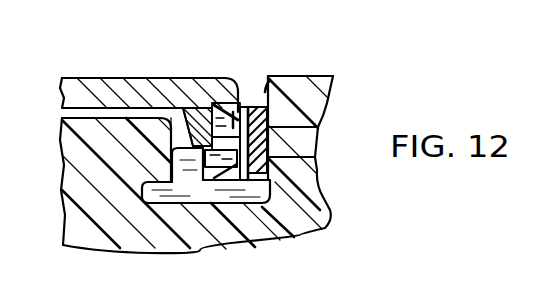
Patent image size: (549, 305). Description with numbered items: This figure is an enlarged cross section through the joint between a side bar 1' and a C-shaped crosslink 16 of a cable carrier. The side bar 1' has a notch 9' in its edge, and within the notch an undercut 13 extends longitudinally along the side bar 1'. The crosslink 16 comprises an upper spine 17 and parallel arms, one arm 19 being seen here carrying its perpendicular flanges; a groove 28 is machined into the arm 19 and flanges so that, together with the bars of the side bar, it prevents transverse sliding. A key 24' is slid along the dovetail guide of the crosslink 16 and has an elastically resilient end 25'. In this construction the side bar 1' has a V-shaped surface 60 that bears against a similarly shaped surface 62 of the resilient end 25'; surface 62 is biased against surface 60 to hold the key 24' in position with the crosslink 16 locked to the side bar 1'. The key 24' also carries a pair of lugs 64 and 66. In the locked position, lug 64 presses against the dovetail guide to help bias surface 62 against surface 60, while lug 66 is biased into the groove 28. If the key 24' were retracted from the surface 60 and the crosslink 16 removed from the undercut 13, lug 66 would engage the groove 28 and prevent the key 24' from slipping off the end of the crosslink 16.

The side bar 1' is at (175, 164).
The upper spine 17 is at (93, 80).
The crosslink 16 is at (123, 74).
The arm 19 is at (190, 114).
The groove 28 is at (200, 138).
The lug 64 is at (218, 103).
The lug 66 is at (213, 167).
The notch 9' is at (245, 92).
The elastically resilient end 25' is at (268, 99).
The V-shaped surface 60 is at (259, 105).
The surface 62 is at (318, 127).
The key 24' is at (316, 164).
The undercut 13 is at (150, 196).